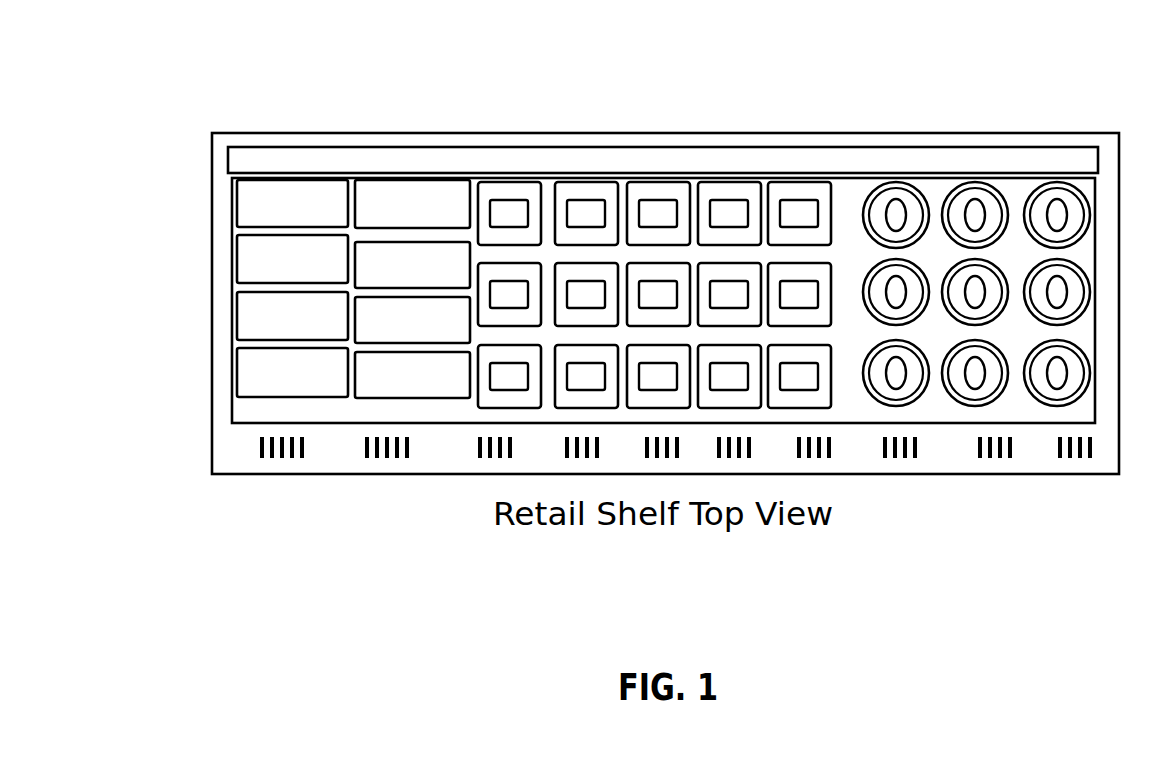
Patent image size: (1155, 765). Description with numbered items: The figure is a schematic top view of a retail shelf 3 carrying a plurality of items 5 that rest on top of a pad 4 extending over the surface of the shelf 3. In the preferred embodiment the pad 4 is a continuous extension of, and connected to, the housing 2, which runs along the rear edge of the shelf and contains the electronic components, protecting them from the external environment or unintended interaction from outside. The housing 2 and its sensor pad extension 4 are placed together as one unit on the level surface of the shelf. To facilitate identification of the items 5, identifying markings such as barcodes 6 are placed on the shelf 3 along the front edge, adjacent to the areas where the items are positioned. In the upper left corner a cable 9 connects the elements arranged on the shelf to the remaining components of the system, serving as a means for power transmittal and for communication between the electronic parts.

The housing 2 is at (663, 91).
The shelf 3 is at (590, 290).
The pad 4 is at (285, 234).
The items 5 is at (277, 345).
The barcodes 6 is at (585, 456).
The cable 9 is at (598, 272).